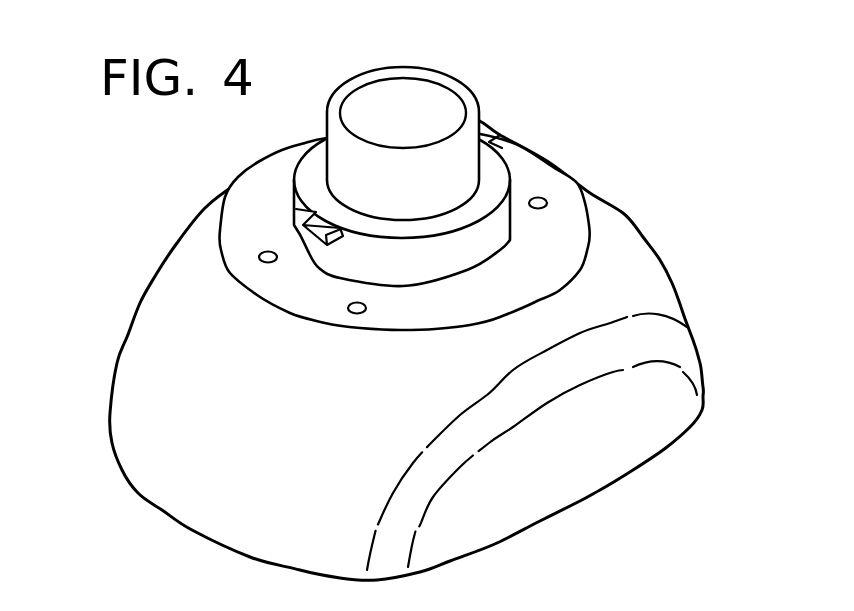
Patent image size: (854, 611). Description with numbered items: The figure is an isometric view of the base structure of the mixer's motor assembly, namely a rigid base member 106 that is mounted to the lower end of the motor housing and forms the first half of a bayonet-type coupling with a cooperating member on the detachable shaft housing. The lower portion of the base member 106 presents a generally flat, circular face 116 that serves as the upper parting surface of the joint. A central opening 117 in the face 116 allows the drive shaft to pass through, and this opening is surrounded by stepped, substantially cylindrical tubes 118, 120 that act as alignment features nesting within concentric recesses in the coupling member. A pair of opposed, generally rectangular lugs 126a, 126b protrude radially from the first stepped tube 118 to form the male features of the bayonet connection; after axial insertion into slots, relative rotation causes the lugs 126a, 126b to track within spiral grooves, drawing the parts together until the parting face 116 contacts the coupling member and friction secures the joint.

The base member 106 is at (132, 298).
The circular face 116 is at (556, 222).
The central opening 117 is at (430, 96).
The first stepped tube 118 is at (487, 252).
The second stepped tube 120 is at (343, 165).
The lug 126a is at (306, 232).
The lug 126b is at (503, 133).